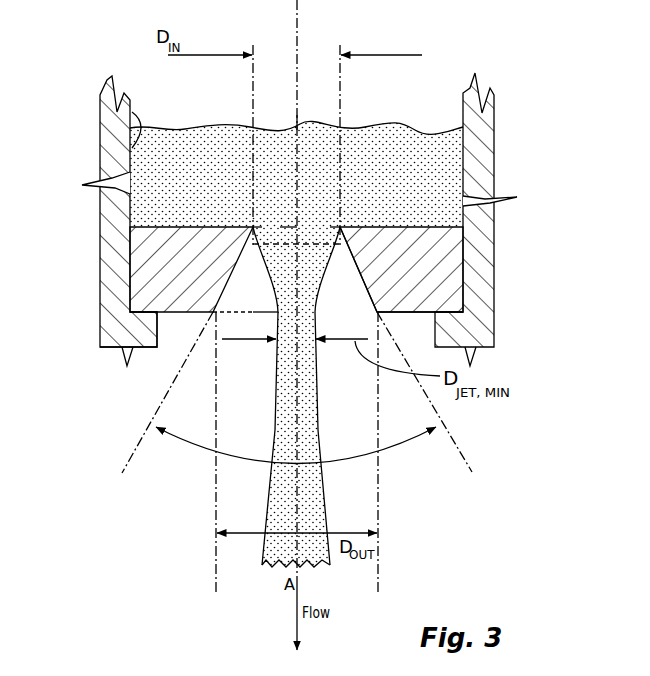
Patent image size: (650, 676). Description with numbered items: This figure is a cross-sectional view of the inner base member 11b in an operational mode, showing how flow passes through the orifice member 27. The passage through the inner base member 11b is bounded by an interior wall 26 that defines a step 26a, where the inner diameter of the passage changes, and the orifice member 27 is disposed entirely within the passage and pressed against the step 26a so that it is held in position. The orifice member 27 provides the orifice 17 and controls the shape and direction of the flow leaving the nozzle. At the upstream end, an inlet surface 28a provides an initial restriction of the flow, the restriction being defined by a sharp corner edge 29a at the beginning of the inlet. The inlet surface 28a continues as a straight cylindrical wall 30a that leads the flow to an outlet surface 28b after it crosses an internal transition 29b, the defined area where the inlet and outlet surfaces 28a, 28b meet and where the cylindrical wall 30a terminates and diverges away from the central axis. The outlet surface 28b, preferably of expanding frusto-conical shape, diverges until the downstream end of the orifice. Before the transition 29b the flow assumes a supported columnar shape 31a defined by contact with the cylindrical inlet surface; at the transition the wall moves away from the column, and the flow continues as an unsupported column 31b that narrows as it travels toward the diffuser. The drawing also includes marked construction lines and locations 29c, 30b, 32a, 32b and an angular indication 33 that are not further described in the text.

The interior wall 26 is at (132, 148).
The inner base member 11b is at (110, 180).
The step 26a is at (128, 342).
The orifice member 27 is at (160, 292).
The inlet surface 28a is at (400, 228).
The outlet surface 28b is at (425, 300).
The sharp corner edge 29a is at (337, 226).
The internal transition 29b is at (366, 277).
The converging surface extension line 29c is at (211, 318).
The straight cylindrical wall 30a is at (256, 226).
The orifice outlet edge 30b is at (240, 314).
The supported columnar shape 31a is at (292, 222).
The unsupported column 31b is at (277, 287).
The orifice inlet 32a is at (305, 118).
The orifice outlet 32b is at (257, 314).
The orifice 17 is at (343, 314).
The jet spread angle 33 is at (387, 450).